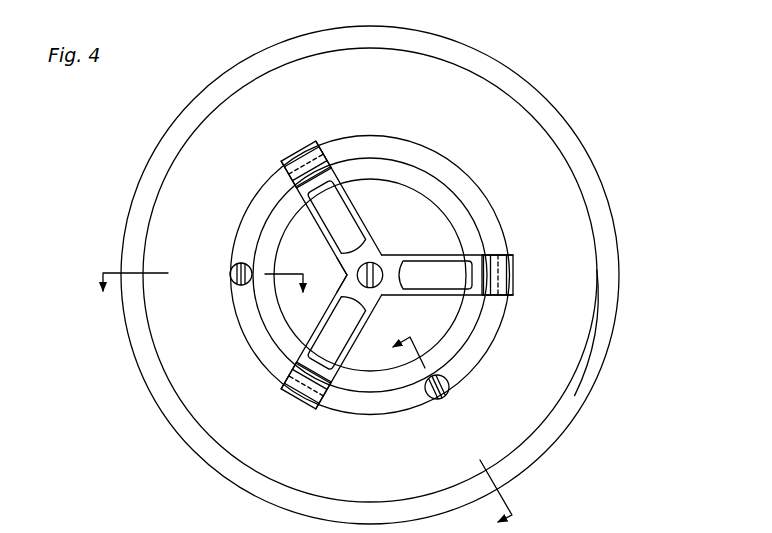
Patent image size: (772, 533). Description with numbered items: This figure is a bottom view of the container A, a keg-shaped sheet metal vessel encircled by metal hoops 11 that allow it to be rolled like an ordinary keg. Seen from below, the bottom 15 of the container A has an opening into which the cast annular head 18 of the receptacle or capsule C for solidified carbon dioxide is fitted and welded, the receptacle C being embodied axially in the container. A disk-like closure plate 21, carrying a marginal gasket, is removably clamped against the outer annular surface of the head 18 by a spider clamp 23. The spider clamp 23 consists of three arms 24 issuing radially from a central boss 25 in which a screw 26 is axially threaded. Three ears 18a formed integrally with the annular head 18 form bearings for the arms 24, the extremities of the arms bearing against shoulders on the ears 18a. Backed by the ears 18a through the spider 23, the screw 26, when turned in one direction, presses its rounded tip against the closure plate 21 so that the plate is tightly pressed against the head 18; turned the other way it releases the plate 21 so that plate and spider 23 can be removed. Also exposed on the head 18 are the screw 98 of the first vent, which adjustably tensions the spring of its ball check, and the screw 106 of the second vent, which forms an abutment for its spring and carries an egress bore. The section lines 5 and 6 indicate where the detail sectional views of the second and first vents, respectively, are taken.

The container A is at (595, 153).
The receptacle or capsule C is at (447, 147).
The metal hoops 11 is at (615, 260).
The bottom 15 is at (569, 358).
The annular head 18 is at (483, 207).
The ears 18a is at (307, 165).
The closure plate 21 is at (382, 187).
The spider clamp 23 is at (386, 250).
The arms 24 is at (447, 294).
The central boss 25 is at (348, 270).
The screw 26 is at (380, 278).
The screw 98 is at (233, 283).
The screw 106 is at (446, 393).
The section line 5- 5 is at (443, 435).
The section line 6- 6 is at (202, 297).